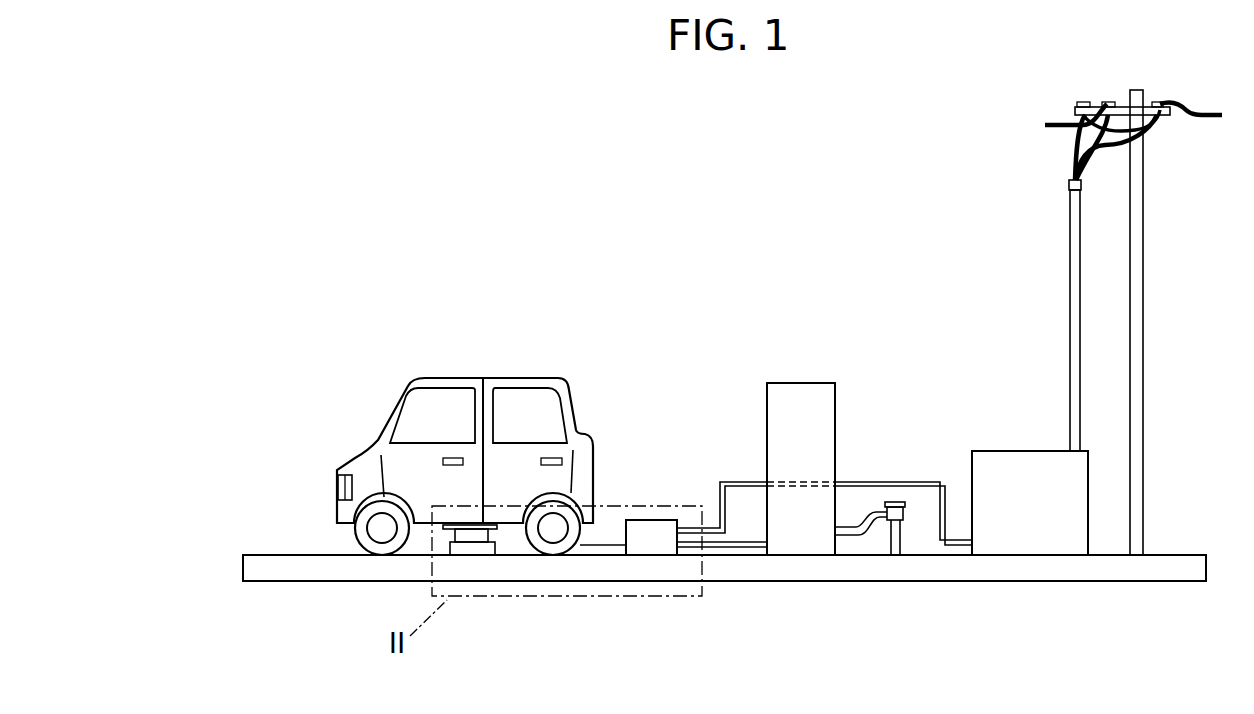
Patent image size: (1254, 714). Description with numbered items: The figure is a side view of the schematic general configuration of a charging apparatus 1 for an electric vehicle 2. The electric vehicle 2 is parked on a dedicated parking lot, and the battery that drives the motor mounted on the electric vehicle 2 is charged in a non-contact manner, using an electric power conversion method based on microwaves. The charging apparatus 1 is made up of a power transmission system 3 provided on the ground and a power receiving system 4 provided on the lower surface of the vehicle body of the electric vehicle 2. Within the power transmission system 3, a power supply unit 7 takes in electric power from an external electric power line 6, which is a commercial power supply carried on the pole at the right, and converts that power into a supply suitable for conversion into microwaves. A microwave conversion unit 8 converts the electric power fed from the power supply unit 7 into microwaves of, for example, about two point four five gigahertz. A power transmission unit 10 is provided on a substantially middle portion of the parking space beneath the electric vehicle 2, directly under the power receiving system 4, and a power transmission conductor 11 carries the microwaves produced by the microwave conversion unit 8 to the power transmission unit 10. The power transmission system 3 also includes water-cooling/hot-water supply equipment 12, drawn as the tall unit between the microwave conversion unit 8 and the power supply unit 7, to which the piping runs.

The charging apparatus 1 is at (880, 326).
The electric vehicle 2 is at (460, 378).
The power transmission system 3 is at (910, 430).
The power receiving system 4 is at (440, 538).
The external electric power line 6 is at (1202, 113).
The power supply unit 7 is at (1027, 451).
The microwave conversion unit 8 is at (653, 527).
The power transmission unit 10 is at (472, 550).
The power transmission conductor 11 is at (603, 548).
The water-cooling/hot-water supply equipment 12 is at (797, 383).